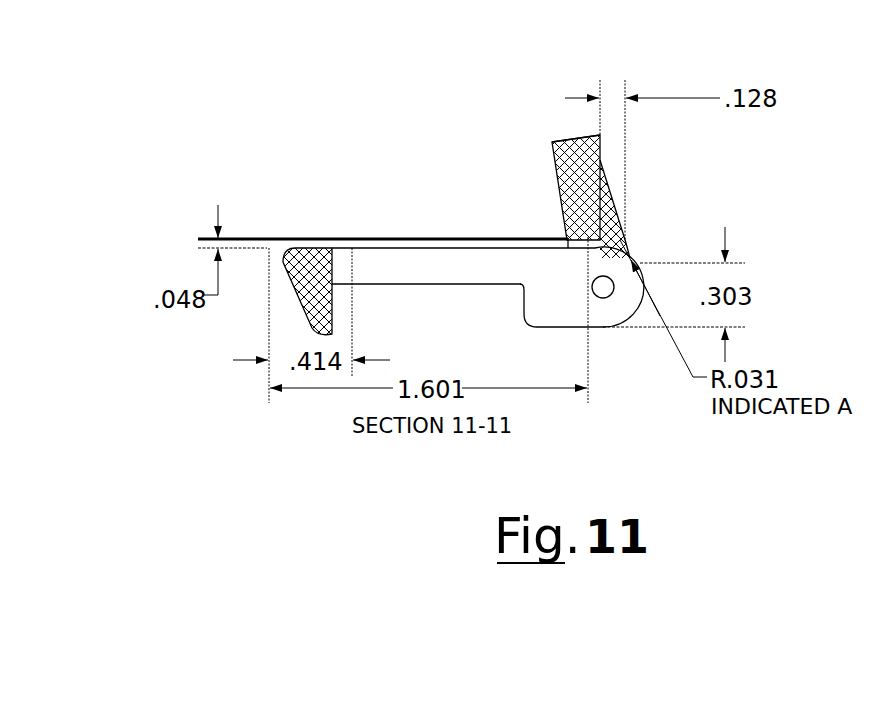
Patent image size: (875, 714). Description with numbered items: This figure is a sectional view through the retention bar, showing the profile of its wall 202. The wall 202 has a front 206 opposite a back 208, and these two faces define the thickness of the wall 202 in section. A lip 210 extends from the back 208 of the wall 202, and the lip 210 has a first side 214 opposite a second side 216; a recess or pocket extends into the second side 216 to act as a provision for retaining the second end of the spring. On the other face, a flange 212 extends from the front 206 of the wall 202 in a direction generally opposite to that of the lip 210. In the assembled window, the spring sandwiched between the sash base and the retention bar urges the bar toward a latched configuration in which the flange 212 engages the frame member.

The wall 202 is at (445, 265).
The front 206 is at (387, 286).
The back 208 is at (407, 238).
The lip 210 is at (565, 134).
The flange 212 is at (316, 326).
The first side 214 is at (552, 167).
The second side 216 is at (614, 165).